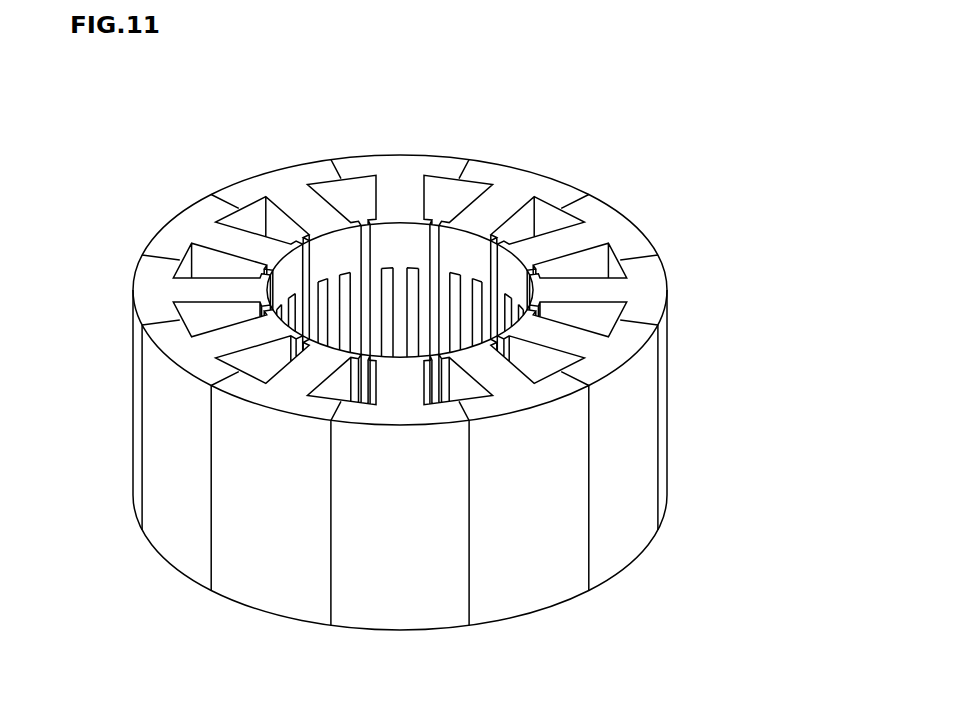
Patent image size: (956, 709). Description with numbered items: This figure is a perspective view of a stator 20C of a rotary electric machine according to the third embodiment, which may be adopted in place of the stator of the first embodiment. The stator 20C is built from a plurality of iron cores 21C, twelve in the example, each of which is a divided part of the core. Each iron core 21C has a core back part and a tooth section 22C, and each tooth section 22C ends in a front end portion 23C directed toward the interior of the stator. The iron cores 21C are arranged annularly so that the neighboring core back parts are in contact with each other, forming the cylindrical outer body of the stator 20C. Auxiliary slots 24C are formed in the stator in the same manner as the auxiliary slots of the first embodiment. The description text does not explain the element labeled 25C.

The stator 20C is at (712, 184).
The iron core 21C is at (540, 486).
The tooth section 22C is at (493, 212).
The front end portion 23C is at (460, 257).
The auxiliary slot 24C is at (458, 306).
The slot 25C is at (362, 235).